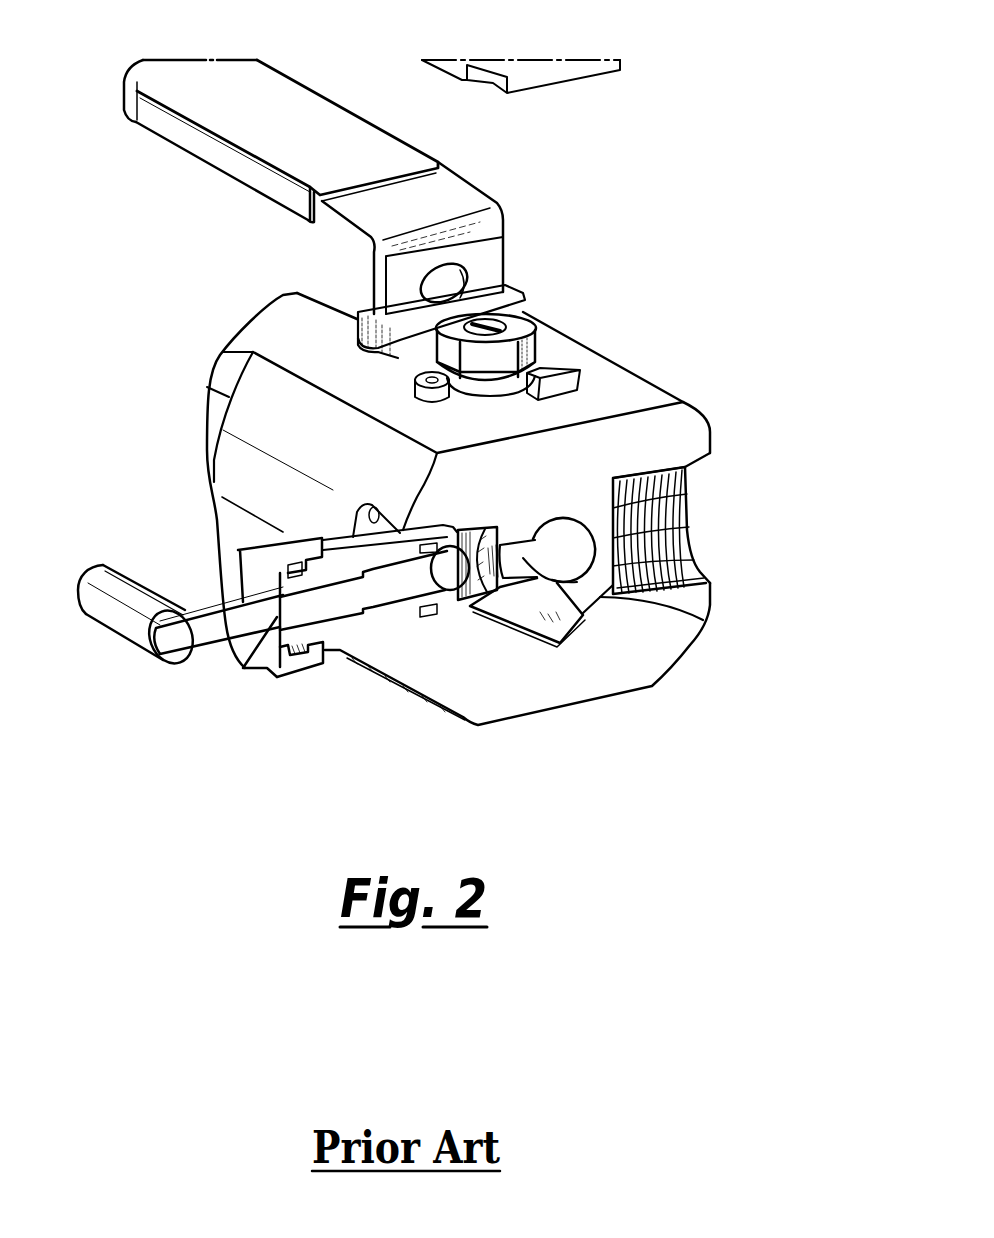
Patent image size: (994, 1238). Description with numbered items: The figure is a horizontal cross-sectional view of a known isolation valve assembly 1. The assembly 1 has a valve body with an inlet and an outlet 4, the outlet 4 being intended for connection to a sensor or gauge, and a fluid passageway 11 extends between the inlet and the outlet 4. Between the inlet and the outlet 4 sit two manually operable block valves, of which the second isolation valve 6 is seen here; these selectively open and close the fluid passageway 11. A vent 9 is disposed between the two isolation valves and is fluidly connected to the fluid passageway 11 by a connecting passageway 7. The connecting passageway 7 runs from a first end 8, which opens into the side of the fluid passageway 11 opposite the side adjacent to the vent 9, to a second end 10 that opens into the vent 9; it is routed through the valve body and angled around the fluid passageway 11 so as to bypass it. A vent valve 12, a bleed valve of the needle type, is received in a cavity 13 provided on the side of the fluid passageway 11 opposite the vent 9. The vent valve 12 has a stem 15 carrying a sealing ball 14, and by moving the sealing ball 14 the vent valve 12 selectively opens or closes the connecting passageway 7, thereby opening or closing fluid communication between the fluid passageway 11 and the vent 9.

The isolation valve assembly 1 is at (698, 290).
The outlet 4 is at (208, 372).
The second isolation valve 6 is at (190, 156).
The connecting passageway 7 is at (534, 624).
The first end 8 is at (568, 585).
The vent 9 is at (680, 498).
The second end 10 is at (704, 612).
The fluid passageway 11 is at (577, 542).
The vent valve 12 is at (224, 567).
The cavity 13 is at (466, 602).
The sealing ball 14 is at (440, 580).
The stem 15 is at (248, 660).